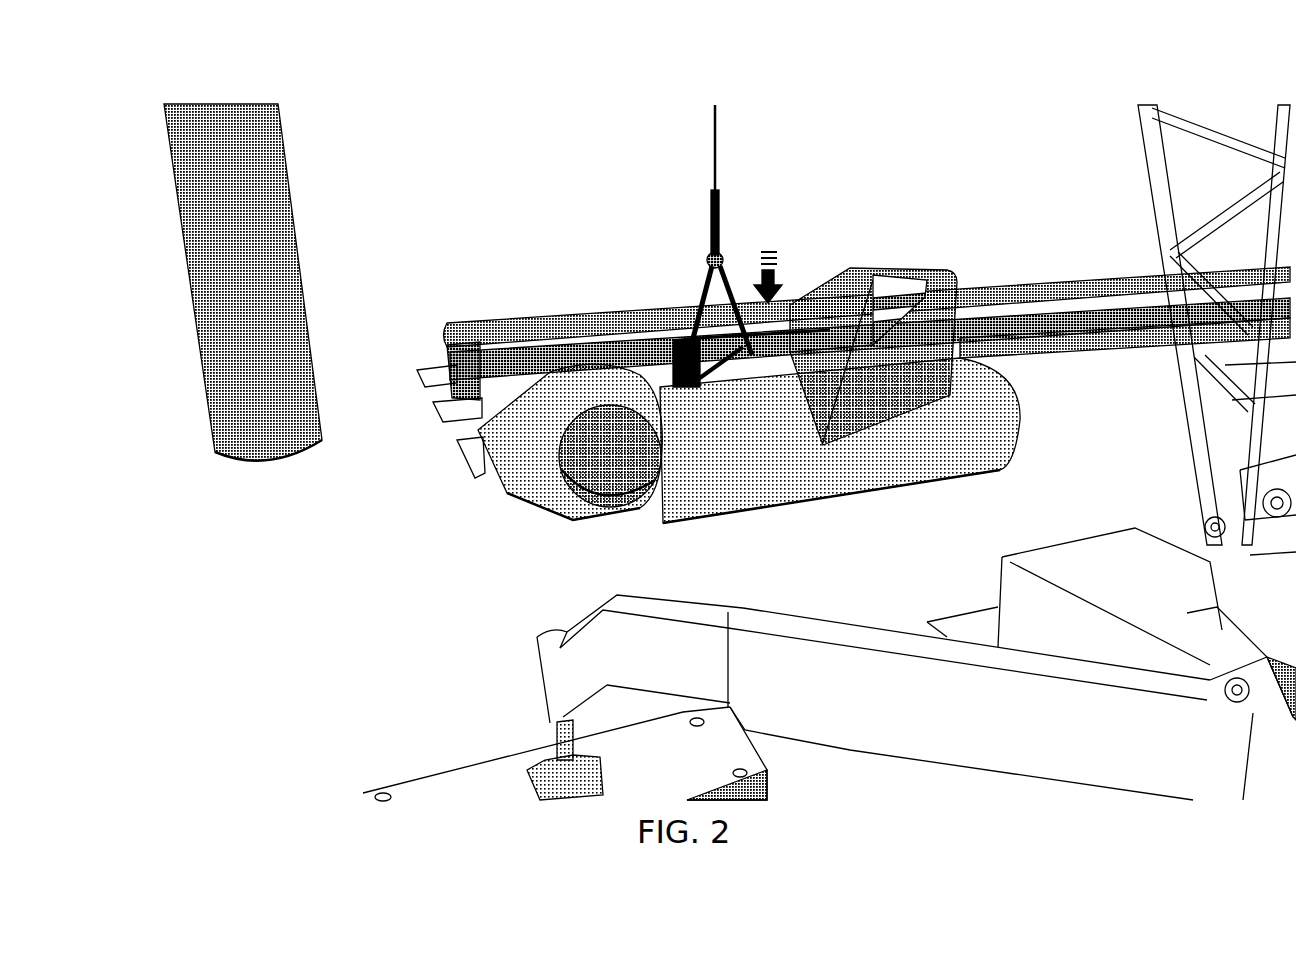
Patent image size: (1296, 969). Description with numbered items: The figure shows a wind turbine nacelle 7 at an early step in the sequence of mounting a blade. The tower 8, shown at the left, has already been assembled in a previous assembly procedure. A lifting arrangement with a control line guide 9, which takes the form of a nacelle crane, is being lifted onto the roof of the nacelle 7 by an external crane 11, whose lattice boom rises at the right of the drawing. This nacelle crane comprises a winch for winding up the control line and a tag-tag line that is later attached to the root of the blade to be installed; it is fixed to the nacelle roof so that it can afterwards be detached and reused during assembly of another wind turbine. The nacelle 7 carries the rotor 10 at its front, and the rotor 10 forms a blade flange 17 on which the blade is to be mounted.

The nacelle 7 is at (800, 477).
The tower 8 is at (268, 190).
The control line guide 9 is at (703, 337).
The rotor 10 is at (543, 487).
The external crane 11 is at (1200, 451).
The blade flange 17 is at (617, 475).